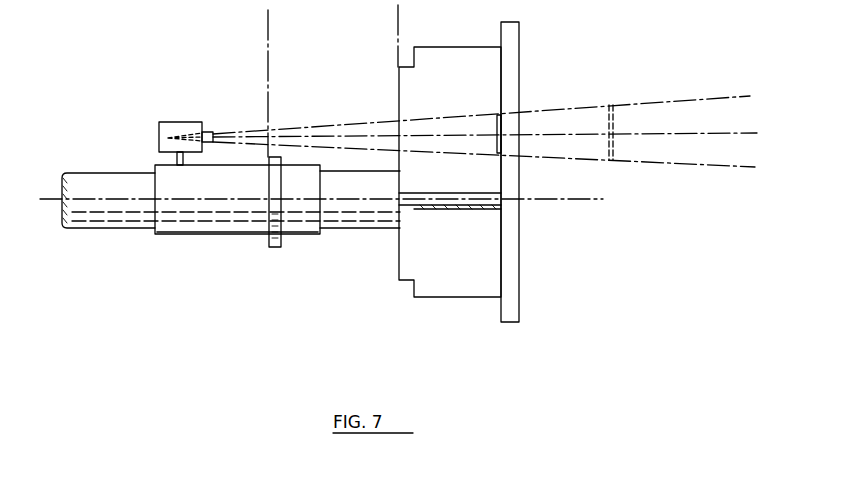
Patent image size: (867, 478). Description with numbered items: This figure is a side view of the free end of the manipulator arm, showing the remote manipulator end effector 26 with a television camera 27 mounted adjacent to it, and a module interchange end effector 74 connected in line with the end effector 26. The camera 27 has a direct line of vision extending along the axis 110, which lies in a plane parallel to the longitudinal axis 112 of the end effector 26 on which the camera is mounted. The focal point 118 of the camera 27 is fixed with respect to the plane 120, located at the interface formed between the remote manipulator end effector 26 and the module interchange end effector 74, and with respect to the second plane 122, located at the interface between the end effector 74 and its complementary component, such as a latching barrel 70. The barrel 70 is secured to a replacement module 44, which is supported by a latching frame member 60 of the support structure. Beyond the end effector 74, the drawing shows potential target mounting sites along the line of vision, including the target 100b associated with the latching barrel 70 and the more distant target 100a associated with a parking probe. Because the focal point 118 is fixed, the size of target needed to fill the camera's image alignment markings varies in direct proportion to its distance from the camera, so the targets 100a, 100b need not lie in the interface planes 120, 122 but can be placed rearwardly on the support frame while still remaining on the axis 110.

The remote manipulator end effector 26 is at (176, 235).
The television camera 27 is at (183, 121).
The replacement module 44 is at (468, 299).
The latching frame member 60 is at (513, 323).
The latching barrel 70 is at (437, 210).
The module interchange end effector 74 is at (312, 237).
The target 100a is at (610, 125).
The target 100b is at (497, 127).
The axis 110 is at (371, 136).
The longitudinal axis 112 is at (541, 204).
The focal point 118 is at (158, 128).
The plane 120 is at (268, 32).
The second plane 122 is at (398, 30).